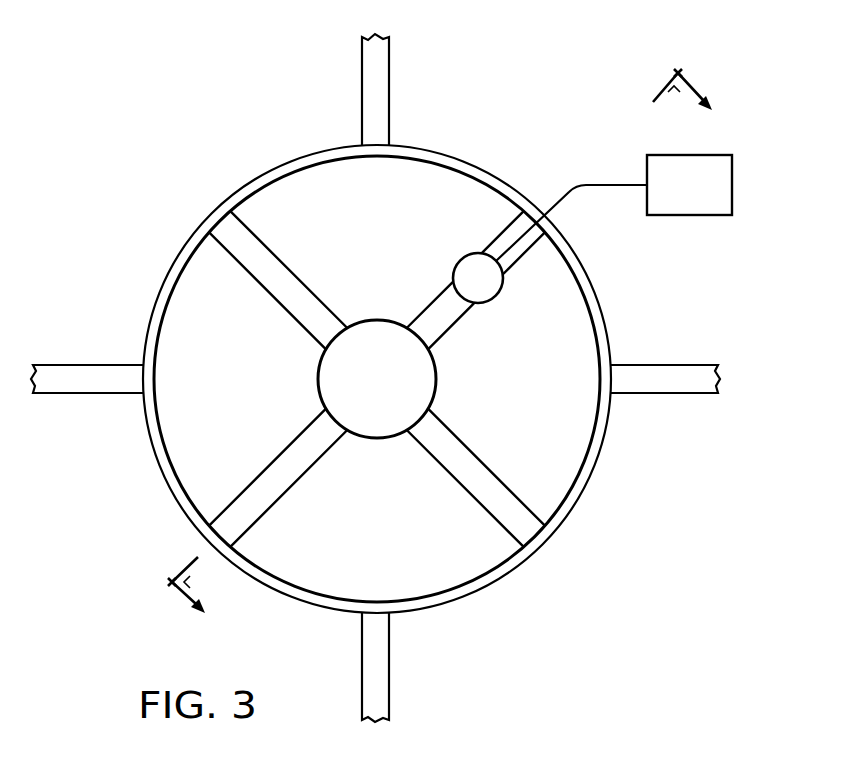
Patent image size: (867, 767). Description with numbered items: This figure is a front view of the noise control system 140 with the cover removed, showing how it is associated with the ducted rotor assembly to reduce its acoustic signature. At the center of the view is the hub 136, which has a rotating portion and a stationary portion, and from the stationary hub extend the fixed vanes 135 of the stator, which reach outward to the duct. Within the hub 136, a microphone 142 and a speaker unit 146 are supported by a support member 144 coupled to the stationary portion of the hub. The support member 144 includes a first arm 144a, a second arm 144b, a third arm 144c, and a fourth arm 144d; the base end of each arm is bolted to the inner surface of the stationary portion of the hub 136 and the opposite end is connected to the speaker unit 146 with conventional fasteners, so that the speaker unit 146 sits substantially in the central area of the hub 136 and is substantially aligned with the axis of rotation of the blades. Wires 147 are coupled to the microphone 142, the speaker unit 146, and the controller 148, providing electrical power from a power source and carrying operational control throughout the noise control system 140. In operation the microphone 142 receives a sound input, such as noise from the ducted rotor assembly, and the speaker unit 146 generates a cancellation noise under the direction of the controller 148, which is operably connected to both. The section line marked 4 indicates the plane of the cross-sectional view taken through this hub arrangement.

The fixed vanes 135 is at (663, 365).
The hub 136 is at (295, 159).
The noise control system 140 is at (528, 60).
The microphone 142 is at (462, 259).
The support member 144 is at (536, 474).
The first arm 144a is at (270, 462).
The second arm 144b is at (458, 322).
The third arm 144c is at (508, 442).
The fourth arm 144d is at (272, 298).
The speaker unit 146 is at (375, 320).
The wires 147 is at (590, 184).
The controller 148 is at (714, 198).
The section line 4- 4 is at (450, 354).